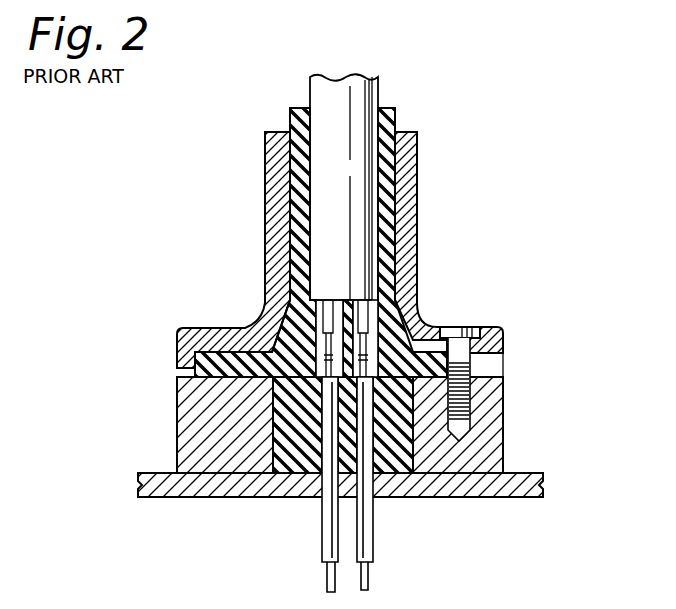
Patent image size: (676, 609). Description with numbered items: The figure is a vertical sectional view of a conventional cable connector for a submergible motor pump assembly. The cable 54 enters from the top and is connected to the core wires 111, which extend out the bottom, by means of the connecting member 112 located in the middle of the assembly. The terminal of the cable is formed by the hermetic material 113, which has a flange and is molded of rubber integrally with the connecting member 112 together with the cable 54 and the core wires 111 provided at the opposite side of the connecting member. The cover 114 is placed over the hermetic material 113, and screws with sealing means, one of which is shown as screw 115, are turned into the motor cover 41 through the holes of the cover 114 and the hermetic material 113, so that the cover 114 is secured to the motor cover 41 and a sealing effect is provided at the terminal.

The motor cover 41 is at (492, 420).
The cable 54 is at (368, 92).
The core wires 111 is at (373, 527).
The connecting member 112 is at (293, 382).
The hermetic material 113 is at (390, 328).
The cover 114 is at (413, 167).
The screw 115 is at (458, 333).